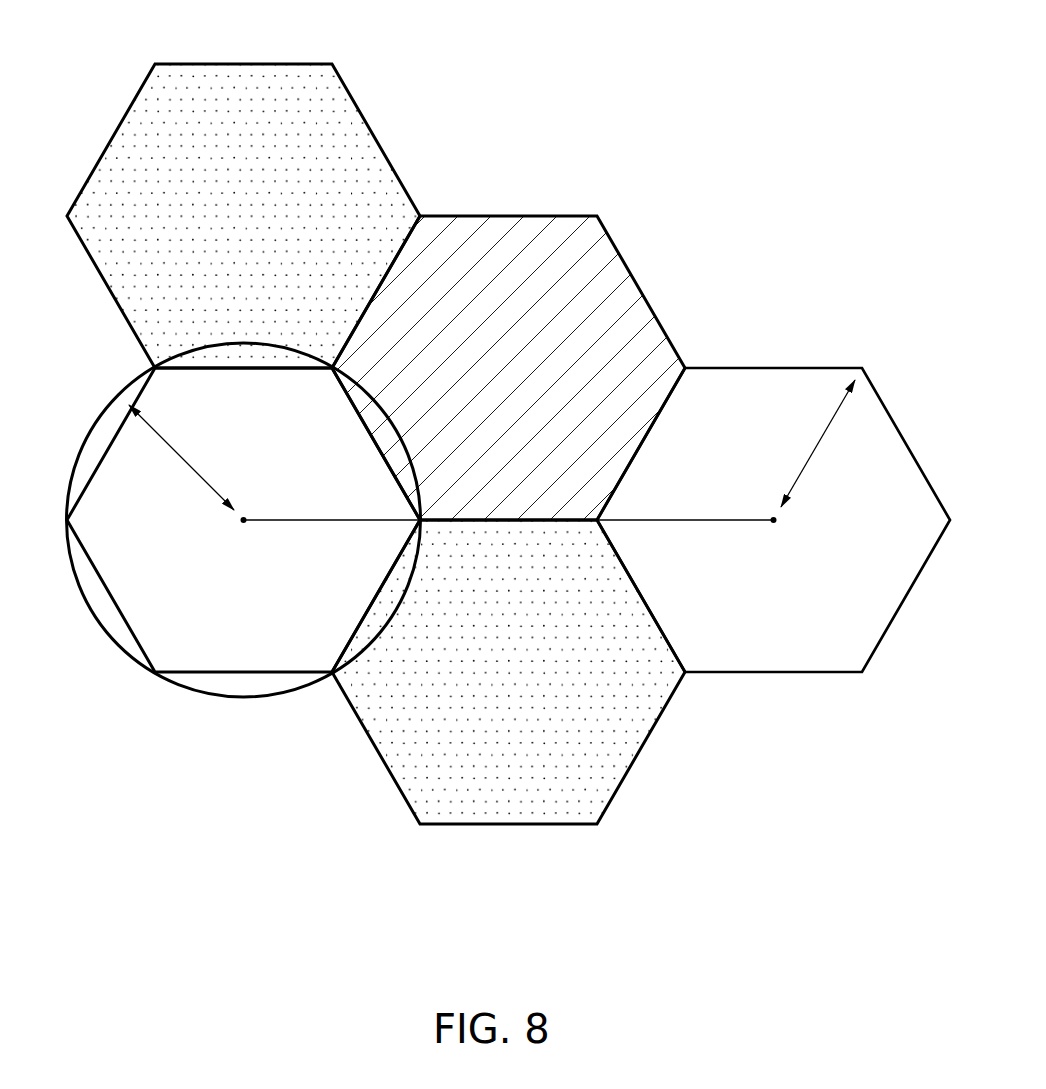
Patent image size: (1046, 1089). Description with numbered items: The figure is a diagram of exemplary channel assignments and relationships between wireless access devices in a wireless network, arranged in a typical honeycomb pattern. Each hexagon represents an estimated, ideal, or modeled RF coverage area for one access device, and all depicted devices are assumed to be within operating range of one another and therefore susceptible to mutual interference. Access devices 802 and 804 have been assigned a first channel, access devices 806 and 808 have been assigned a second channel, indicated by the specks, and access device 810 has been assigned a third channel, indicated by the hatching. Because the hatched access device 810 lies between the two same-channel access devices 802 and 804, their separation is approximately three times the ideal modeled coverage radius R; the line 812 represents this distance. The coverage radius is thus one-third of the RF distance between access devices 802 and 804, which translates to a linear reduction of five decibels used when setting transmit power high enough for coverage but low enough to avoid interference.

The access device 802 is at (240, 673).
The access device 804 is at (777, 673).
The access device 806 is at (243, 63).
The access device 808 is at (515, 825).
The access device 810 is at (510, 216).
The line 812 is at (698, 520).